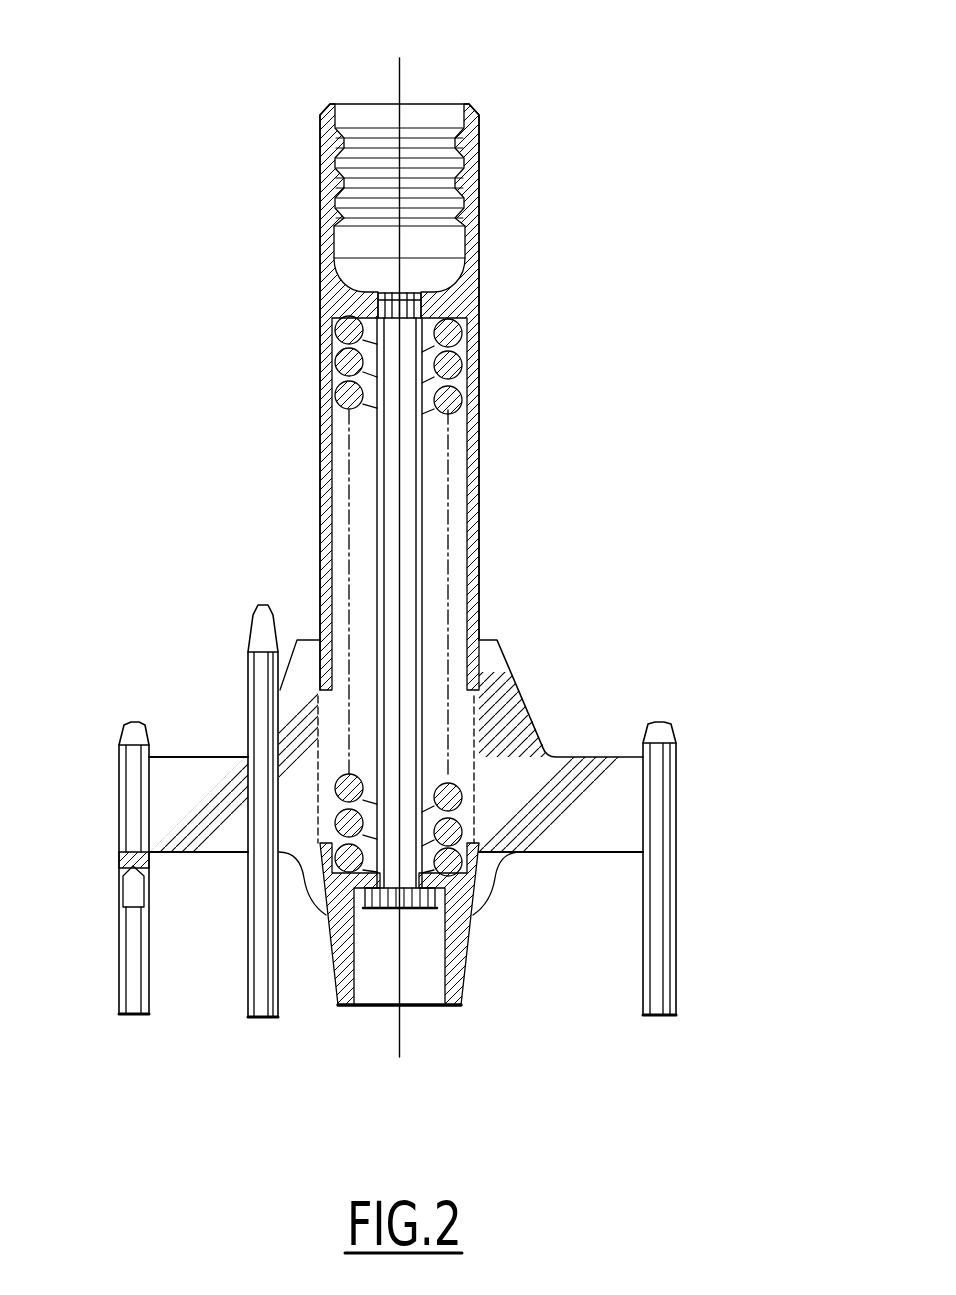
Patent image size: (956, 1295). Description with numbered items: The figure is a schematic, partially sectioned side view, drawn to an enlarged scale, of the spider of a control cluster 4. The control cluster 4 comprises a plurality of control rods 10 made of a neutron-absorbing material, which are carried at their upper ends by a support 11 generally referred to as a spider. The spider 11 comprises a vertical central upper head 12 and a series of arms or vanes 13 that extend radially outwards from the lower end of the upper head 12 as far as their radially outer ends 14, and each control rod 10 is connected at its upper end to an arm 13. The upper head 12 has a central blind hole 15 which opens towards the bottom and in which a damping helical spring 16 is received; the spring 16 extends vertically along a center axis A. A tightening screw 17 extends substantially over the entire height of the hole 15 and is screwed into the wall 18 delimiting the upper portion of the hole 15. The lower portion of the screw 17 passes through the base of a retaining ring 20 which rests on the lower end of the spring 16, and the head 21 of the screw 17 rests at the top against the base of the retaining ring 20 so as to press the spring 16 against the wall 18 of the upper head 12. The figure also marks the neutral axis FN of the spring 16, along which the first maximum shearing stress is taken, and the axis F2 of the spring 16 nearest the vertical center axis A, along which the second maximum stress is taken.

The center axis A is at (401, 86).
The control cluster 4 is at (742, 866).
The control rods 10 is at (122, 937).
The support 11 is at (492, 466).
The upper head 12 is at (479, 512).
The arms 13 is at (300, 670).
The radially outer ends 14 is at (167, 798).
The central blind hole 15 is at (437, 617).
The damping helical spring 16 is at (463, 377).
The tightening screw 17 is at (386, 558).
The wall 18 is at (452, 300).
The retaining ring 20 is at (340, 932).
The head 21 is at (372, 920).
The neutral axis FN is at (345, 344).
The axis F2 is at (345, 384).